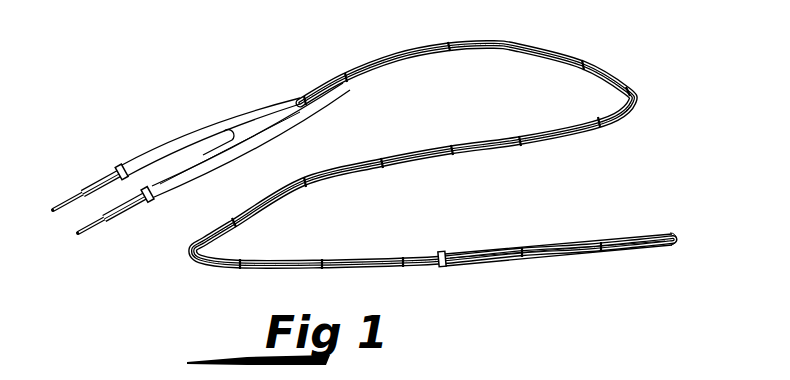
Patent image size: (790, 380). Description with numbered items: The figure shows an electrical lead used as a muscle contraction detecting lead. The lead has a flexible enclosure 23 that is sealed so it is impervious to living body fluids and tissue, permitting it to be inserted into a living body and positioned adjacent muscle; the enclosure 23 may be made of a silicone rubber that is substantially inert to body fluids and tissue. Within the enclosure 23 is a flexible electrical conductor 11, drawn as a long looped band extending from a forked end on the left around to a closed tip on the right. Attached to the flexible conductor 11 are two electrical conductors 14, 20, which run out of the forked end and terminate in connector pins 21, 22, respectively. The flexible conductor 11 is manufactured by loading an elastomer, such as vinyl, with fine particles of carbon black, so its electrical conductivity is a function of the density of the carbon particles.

The flexible electrical conductor 11 is at (583, 252).
The electrical conductor 14 is at (180, 147).
The electrical conductor 20 is at (193, 177).
The connector pin 21 is at (62, 202).
The connector pin 22 is at (92, 232).
The flexible enclosure 23 is at (675, 233).